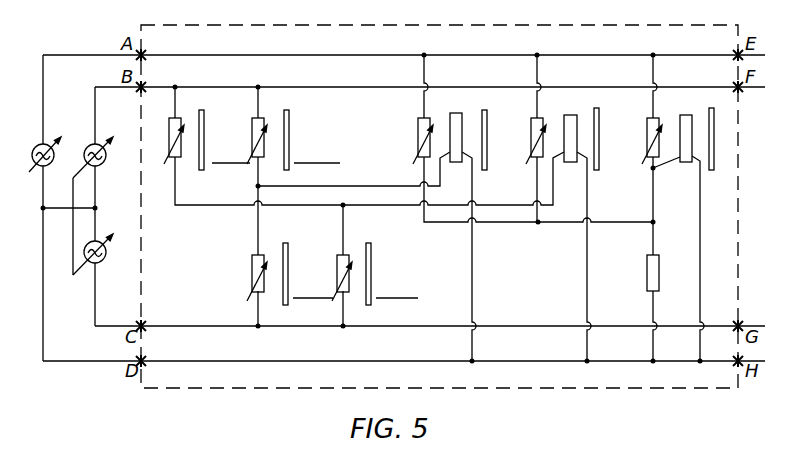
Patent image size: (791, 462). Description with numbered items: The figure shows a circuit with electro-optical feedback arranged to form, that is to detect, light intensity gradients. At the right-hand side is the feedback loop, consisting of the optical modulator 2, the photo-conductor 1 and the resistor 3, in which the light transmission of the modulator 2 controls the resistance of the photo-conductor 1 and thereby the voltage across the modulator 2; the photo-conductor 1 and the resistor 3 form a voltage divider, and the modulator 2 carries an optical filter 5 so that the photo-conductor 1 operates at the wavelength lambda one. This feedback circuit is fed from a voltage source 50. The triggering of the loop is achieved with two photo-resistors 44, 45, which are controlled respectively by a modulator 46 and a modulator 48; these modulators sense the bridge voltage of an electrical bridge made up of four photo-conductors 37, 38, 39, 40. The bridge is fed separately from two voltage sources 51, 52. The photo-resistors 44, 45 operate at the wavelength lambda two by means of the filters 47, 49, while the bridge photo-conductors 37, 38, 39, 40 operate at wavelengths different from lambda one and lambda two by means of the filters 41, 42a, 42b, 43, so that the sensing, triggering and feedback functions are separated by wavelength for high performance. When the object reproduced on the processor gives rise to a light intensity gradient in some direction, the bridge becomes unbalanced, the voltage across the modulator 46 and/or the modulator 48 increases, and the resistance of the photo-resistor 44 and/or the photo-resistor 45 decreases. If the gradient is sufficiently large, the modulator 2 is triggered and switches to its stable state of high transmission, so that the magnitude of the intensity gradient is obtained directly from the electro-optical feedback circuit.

The photo-conductor 1 is at (647, 142).
The optical modulator 2 is at (693, 122).
The resistor 3 is at (647, 272).
The optical filter 5 is at (715, 133).
The photo-conductor 37 is at (172, 117).
The photo-conductor 38 is at (251, 146).
The photo-conductor 39 is at (337, 273).
The photo-conductor 40 is at (251, 267).
The filter 41 is at (205, 117).
The filter 42a is at (290, 118).
The filter 42b is at (289, 256).
The filter 43 is at (372, 252).
The photo-resistor 44 is at (417, 131).
The photo-resistor 45 is at (532, 144).
The modulator 46 is at (463, 122).
The filter 47 is at (488, 135).
The modulator 48 is at (578, 122).
The filter 49 is at (600, 133).
The voltage source 50 is at (52, 138).
The voltage source 51 is at (100, 168).
The voltage source 52 is at (100, 266).